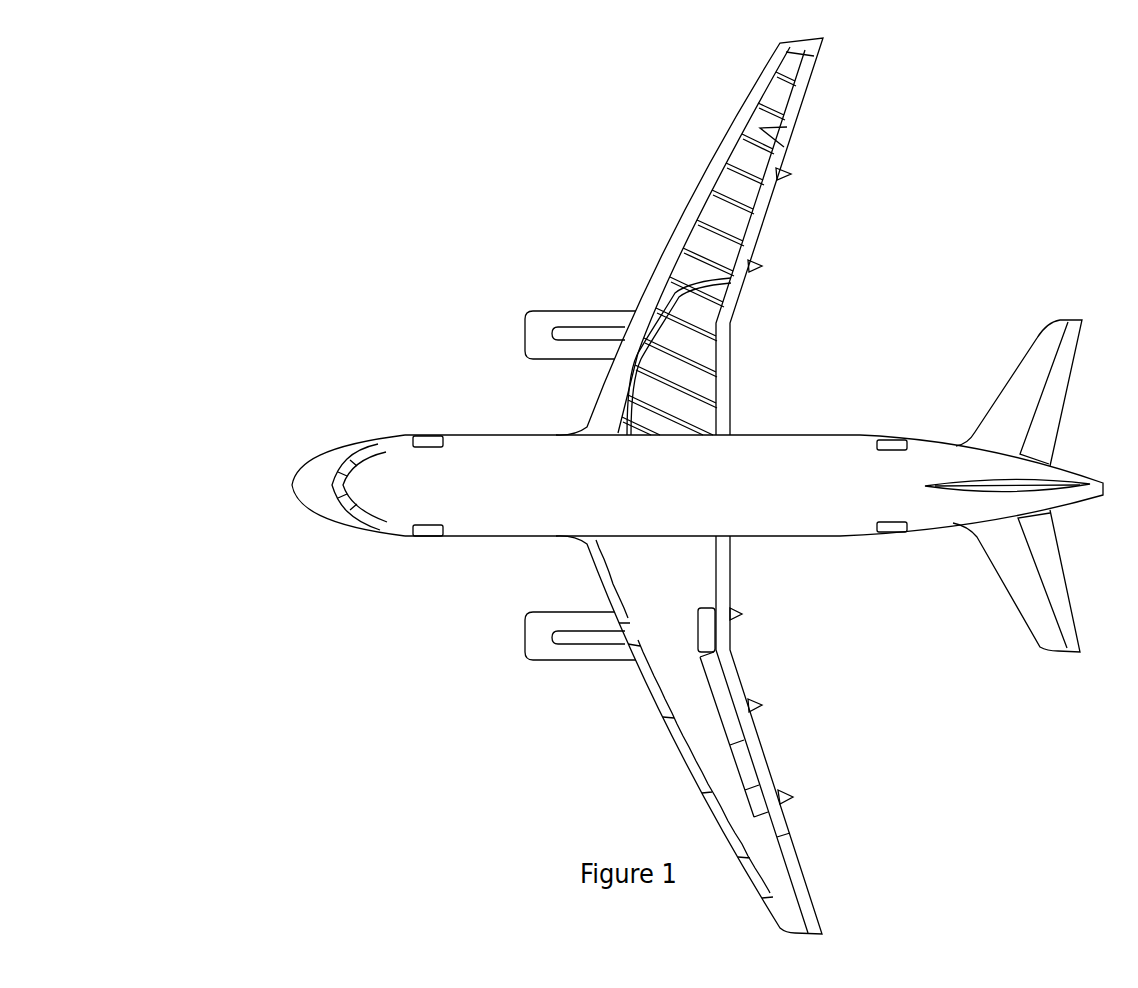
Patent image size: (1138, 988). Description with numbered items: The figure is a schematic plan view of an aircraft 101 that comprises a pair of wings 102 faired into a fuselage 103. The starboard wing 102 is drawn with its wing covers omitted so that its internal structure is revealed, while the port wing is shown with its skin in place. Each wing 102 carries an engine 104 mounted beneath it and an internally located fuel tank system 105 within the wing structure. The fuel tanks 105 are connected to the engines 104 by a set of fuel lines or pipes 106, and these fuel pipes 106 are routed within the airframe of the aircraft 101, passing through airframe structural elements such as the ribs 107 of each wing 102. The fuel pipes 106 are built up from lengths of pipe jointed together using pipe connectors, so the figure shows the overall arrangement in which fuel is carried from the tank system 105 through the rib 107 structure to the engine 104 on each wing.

The aircraft 101 is at (318, 357).
The wing 102 is at (780, 43).
The fuselage 103 is at (927, 528).
The engine 104 is at (542, 331).
The fuel tank system 105 is at (700, 358).
The fuel pipes 106 is at (677, 277).
The ribs 107 is at (700, 197).